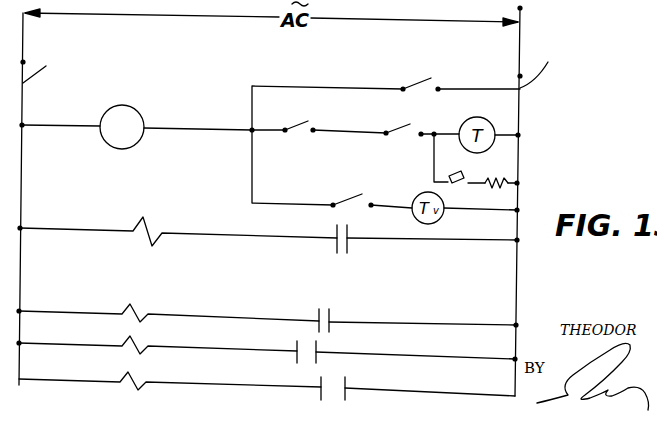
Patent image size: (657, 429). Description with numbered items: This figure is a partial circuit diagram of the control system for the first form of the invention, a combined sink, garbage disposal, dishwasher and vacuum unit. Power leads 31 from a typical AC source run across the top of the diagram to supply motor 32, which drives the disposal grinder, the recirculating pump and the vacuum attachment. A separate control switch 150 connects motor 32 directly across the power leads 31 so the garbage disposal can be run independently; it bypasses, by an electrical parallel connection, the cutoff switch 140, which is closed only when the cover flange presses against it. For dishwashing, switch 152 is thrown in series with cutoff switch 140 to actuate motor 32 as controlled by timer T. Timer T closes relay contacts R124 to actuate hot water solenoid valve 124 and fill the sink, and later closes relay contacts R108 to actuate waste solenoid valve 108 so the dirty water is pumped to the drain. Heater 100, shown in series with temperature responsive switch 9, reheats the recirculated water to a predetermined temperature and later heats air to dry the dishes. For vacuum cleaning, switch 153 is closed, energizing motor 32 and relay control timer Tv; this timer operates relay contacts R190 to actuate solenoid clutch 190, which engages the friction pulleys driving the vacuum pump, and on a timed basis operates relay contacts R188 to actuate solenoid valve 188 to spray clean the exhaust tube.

The power leads 31 is at (296, 66).
The motor 32 is at (150, 90).
The control switch 150 is at (426, 83).
The switch 152 is at (291, 121).
The cutoff switch 140 is at (406, 127).
The switch 153 is at (349, 202).
The temperature responsive switch 9 is at (457, 183).
The heater 100 is at (505, 179).
The waste solenoid valve 108 is at (178, 228).
The relay contacts R108 is at (427, 236).
The hot water solenoid valve 124 is at (169, 307).
The relay contacts R124 is at (417, 317).
The solenoid valve 188 is at (158, 341).
The relay contacts R188 is at (406, 350).
The solenoid 190 is at (170, 378).
The relay contacts R190 is at (418, 387).